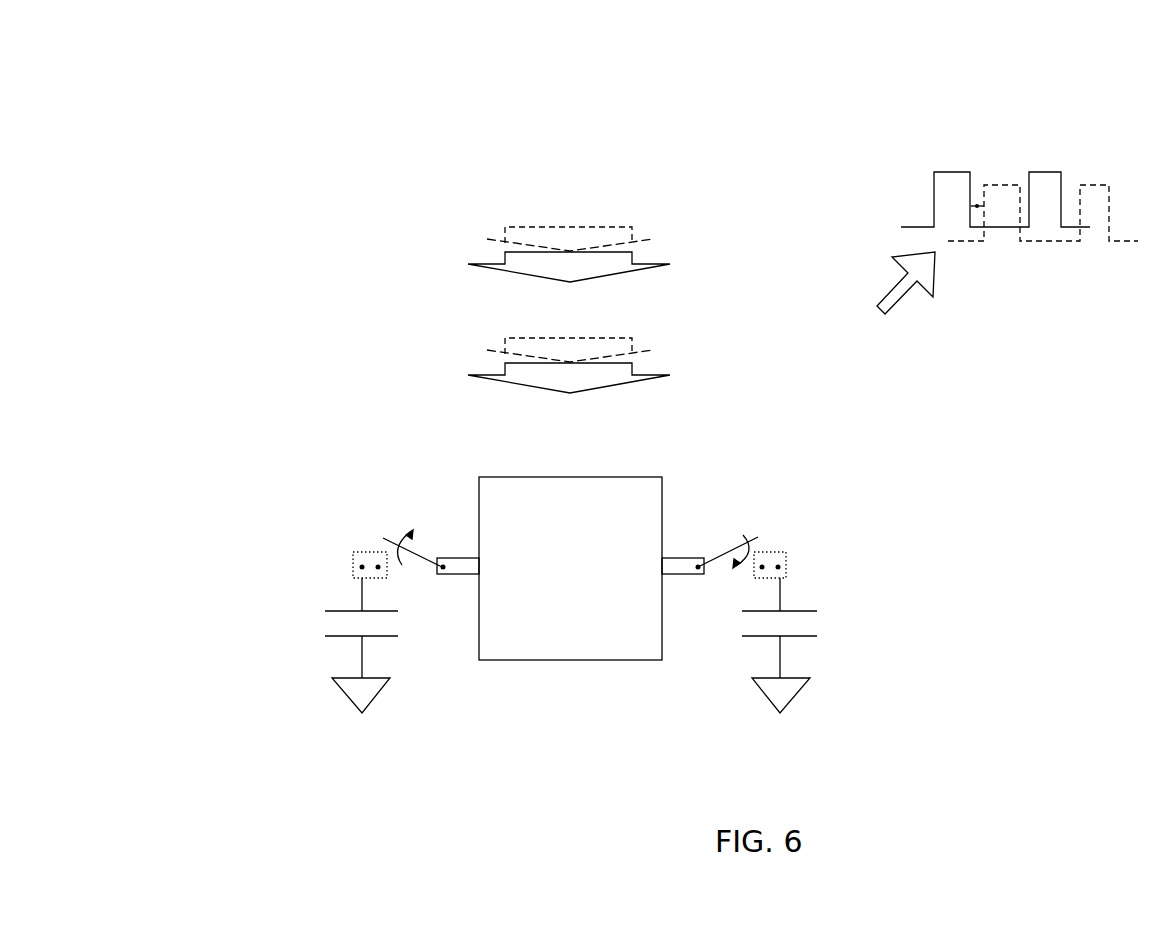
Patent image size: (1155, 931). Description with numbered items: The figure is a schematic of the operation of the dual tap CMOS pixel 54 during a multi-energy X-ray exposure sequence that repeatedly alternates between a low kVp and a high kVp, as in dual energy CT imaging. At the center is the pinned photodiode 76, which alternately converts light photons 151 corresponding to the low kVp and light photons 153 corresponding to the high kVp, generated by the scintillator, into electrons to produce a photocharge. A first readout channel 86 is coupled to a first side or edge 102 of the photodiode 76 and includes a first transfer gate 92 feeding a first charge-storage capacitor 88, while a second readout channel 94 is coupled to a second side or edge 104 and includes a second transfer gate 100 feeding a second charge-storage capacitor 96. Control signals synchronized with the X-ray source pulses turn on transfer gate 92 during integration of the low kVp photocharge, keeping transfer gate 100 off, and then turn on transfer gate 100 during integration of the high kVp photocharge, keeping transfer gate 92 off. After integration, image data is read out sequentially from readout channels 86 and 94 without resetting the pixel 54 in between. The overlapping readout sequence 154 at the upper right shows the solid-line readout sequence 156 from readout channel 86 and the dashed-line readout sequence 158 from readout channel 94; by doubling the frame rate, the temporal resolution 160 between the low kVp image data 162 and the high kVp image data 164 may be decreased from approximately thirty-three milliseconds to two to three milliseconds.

The pixel 54 is at (569, 653).
The photodiode 76 is at (570, 662).
The first readout channel 86 is at (330, 532).
The first charge-storage capacitor 88 is at (333, 638).
The first transfer gate 92 is at (434, 557).
The second readout channel 94 is at (828, 532).
The second charge-storage capacitor 96 is at (800, 638).
The second transfer gate 100 is at (708, 557).
The first side or edge 102 is at (478, 636).
The second side or edge 104 is at (665, 662).
The light photons corresponding to the low kVp 151 is at (632, 257).
The light photons corresponding to the high kVp 153 is at (632, 231).
The overlapping readout sequence 154 is at (1007, 188).
The readout sequence from the first readout channel 156 is at (988, 170).
The readout sequence from the second readout channel 158 is at (1043, 215).
The temporal resolution 160 is at (975, 204).
The image data corresponding to the low kVp 162 is at (950, 171).
The image data corresponding to the high kVp 164 is at (1005, 184).